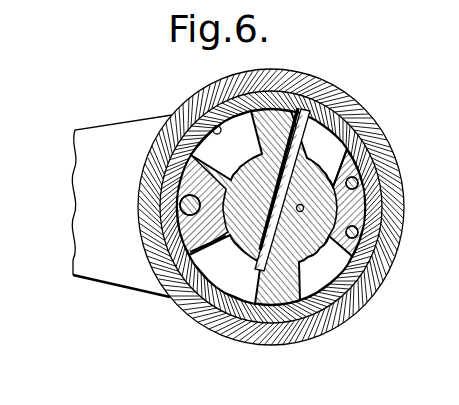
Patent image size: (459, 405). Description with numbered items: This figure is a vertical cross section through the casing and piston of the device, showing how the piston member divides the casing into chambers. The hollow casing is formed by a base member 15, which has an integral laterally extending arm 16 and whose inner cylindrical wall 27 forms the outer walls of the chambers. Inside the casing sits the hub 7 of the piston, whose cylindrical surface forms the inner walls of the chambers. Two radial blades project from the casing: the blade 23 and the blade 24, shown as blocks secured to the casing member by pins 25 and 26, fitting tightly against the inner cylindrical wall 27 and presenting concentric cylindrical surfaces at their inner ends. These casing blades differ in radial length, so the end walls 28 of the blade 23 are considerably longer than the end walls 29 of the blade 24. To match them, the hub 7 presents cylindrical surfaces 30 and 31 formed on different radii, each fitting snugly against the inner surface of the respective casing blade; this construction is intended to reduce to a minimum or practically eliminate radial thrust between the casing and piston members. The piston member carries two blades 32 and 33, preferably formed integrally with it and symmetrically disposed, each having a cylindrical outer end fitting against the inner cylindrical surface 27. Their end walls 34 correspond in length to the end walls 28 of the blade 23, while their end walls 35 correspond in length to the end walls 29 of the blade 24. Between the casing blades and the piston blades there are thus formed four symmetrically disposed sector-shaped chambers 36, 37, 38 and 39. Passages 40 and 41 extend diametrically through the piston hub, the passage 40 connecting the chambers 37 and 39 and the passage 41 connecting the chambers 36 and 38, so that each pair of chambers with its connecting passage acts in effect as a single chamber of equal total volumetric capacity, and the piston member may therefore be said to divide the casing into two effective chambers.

The hub of the piston 7 is at (223, 298).
The base member 15 is at (306, 118).
The laterally extending arm 16 is at (123, 126).
The blade of the casing member 23 is at (188, 228).
The blade of the casing member 24 is at (362, 207).
The pin 25 is at (186, 198).
The pin 26 is at (357, 181).
The inner cylindrical wall of the casing 27 is at (222, 128).
The end walls of blade 23 28 is at (204, 249).
The end walls of blade 24 29 is at (350, 172).
The cylindrical surface of the piston hub 30 is at (246, 162).
The cylindrical surface of the piston hub 31 is at (319, 149).
The blade of the piston member 32 is at (272, 122).
The blade of the piston member 33 is at (277, 297).
The end walls of the piston blades 34 is at (255, 127).
The end walls of the piston blades 35 is at (296, 131).
The sector-shaped chamber 36 is at (226, 145).
The sector-shaped chamber 37 is at (336, 150).
The sector-shaped chamber 38 is at (325, 268).
The sector-shaped chamber 39 is at (225, 269).
The passage 40 is at (261, 292).
The passage 41 is at (285, 305).